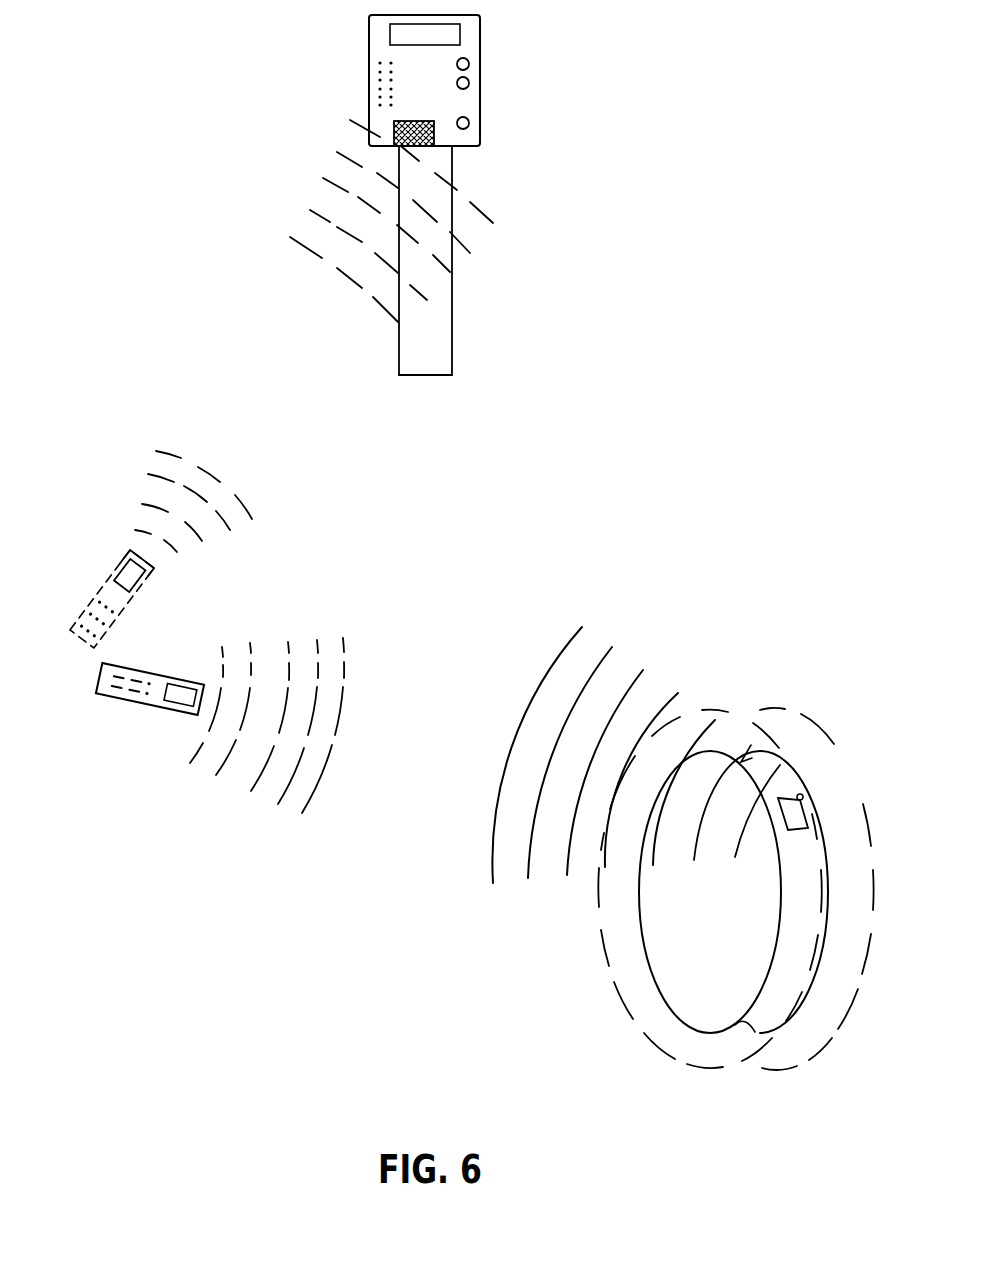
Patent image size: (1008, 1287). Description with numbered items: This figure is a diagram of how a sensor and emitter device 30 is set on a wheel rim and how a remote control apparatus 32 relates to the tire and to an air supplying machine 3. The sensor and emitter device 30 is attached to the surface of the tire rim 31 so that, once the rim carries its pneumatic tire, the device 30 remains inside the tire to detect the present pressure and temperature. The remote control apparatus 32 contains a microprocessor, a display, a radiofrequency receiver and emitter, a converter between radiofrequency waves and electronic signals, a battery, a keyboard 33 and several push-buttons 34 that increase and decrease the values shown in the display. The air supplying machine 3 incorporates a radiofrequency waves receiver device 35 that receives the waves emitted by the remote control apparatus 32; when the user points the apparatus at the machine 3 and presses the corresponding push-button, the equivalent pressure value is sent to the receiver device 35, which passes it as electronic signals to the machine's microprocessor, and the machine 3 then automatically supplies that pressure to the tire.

The air supplying machine 3 is at (493, 81).
The radiofrequency waves receiver device 35 is at (440, 144).
The remote control apparatus 32 is at (160, 725).
The keyboard 33 is at (106, 688).
The push-buttons 34 is at (158, 674).
The tire rim 31 is at (838, 913).
The sensor and emitter device 30 is at (803, 796).